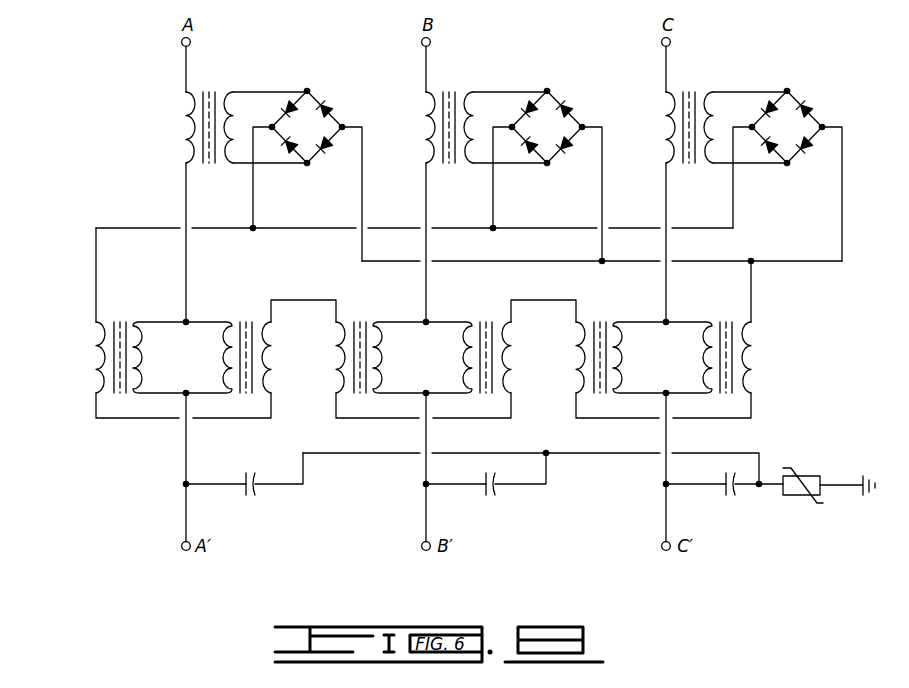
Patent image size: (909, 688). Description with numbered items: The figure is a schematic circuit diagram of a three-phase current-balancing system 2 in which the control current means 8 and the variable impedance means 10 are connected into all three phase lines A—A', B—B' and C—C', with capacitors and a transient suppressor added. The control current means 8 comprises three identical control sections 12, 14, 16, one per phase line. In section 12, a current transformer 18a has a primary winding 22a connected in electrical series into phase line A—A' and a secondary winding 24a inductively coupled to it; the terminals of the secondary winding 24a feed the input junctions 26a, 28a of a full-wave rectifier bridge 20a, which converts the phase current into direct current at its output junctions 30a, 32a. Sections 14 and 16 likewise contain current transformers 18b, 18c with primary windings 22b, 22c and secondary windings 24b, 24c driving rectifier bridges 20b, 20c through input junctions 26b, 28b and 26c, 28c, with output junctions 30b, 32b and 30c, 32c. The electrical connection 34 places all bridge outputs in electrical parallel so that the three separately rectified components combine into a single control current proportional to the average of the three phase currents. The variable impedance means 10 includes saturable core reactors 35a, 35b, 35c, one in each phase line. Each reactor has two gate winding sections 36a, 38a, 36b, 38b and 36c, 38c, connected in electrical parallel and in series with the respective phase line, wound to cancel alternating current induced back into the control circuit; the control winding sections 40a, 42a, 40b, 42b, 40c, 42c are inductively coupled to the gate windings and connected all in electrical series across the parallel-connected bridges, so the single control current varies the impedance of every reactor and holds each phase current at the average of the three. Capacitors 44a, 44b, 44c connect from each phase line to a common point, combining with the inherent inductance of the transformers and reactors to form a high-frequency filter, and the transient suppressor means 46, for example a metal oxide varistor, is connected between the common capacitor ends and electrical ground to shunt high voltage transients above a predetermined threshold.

The output transformer 2 is at (793, 336).
The control current means 8 is at (186, 102).
The variable impedance means 10 is at (173, 290).
The control section 12 is at (265, 84).
The control section 14 is at (547, 148).
The control section 16 is at (787, 148).
The current transformer 18a is at (210, 82).
The current transformer 18b is at (460, 102).
The current transformer 18c is at (699, 102).
The full-wave rectifier bridge 20a is at (334, 98).
The full-wave rectifier bridge 20b is at (594, 91).
The full-wave rectifier bridge 20c is at (837, 91).
The primary winding 22a is at (184, 110).
The primary winding 22b is at (408, 134).
The primary winding 22c is at (647, 134).
The secondary winding 24a is at (236, 125).
The secondary winding 24b is at (487, 127).
The secondary winding 24c is at (727, 127).
The input junction 26a is at (296, 103).
The input junction 26b is at (566, 79).
The input junction 26c is at (807, 79).
The input junction 28a is at (299, 168).
The input junction 28b is at (527, 181).
The input junction 28c is at (768, 181).
The output junction 30a is at (270, 135).
The output junction 30b is at (490, 163).
The output junction 30c is at (730, 164).
The output junction 32a is at (348, 124).
The output junction 32b is at (600, 122).
The output junction 32c is at (843, 122).
The electrical connection 34 is at (250, 231).
The saturable core reactor 35a is at (200, 320).
The saturable core reactor 35b is at (458, 244).
The saturable core reactor 35c is at (698, 244).
The gate winding section 36a is at (148, 337).
The gate winding section 36b is at (405, 357).
The gate winding section 36c is at (644, 357).
The gate winding section 38a is at (222, 361).
The gate winding section 38b is at (440, 357).
The gate winding section 38c is at (680, 357).
The control winding section 40a is at (95, 368).
The control winding section 40b is at (399, 370).
The control winding section 40c is at (640, 370).
The control winding section 42a is at (273, 340).
The control winding section 42b is at (539, 346).
The control winding section 42c is at (777, 327).
The capacitor 44a is at (240, 495).
The capacitor 44b is at (486, 487).
The capacitor 44c is at (718, 497).
The transient suppressor means 46 is at (803, 475).